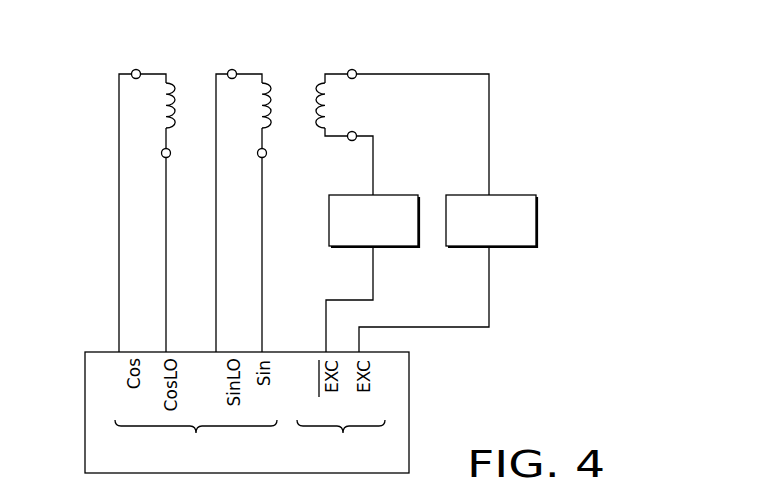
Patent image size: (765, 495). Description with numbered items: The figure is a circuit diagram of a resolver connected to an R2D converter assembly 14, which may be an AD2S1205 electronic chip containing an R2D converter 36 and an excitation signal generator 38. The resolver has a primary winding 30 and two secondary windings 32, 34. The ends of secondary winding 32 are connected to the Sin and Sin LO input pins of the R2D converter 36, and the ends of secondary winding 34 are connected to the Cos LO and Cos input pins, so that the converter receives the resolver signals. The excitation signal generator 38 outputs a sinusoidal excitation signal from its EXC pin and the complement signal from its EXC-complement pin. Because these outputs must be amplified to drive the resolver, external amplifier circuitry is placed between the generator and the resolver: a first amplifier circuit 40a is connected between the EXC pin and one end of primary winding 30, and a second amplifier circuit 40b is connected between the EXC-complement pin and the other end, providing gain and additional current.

The R2D converter assembly 14 is at (85, 412).
The primary winding 30 is at (316, 86).
The secondary winding 32 is at (270, 86).
The secondary winding 34 is at (174, 86).
The R2D converter 36 is at (196, 439).
The excitation signal generator 38 is at (341, 439).
The first amplifier circuit 40a is at (516, 195).
The second amplifier circuit 40b is at (398, 195).